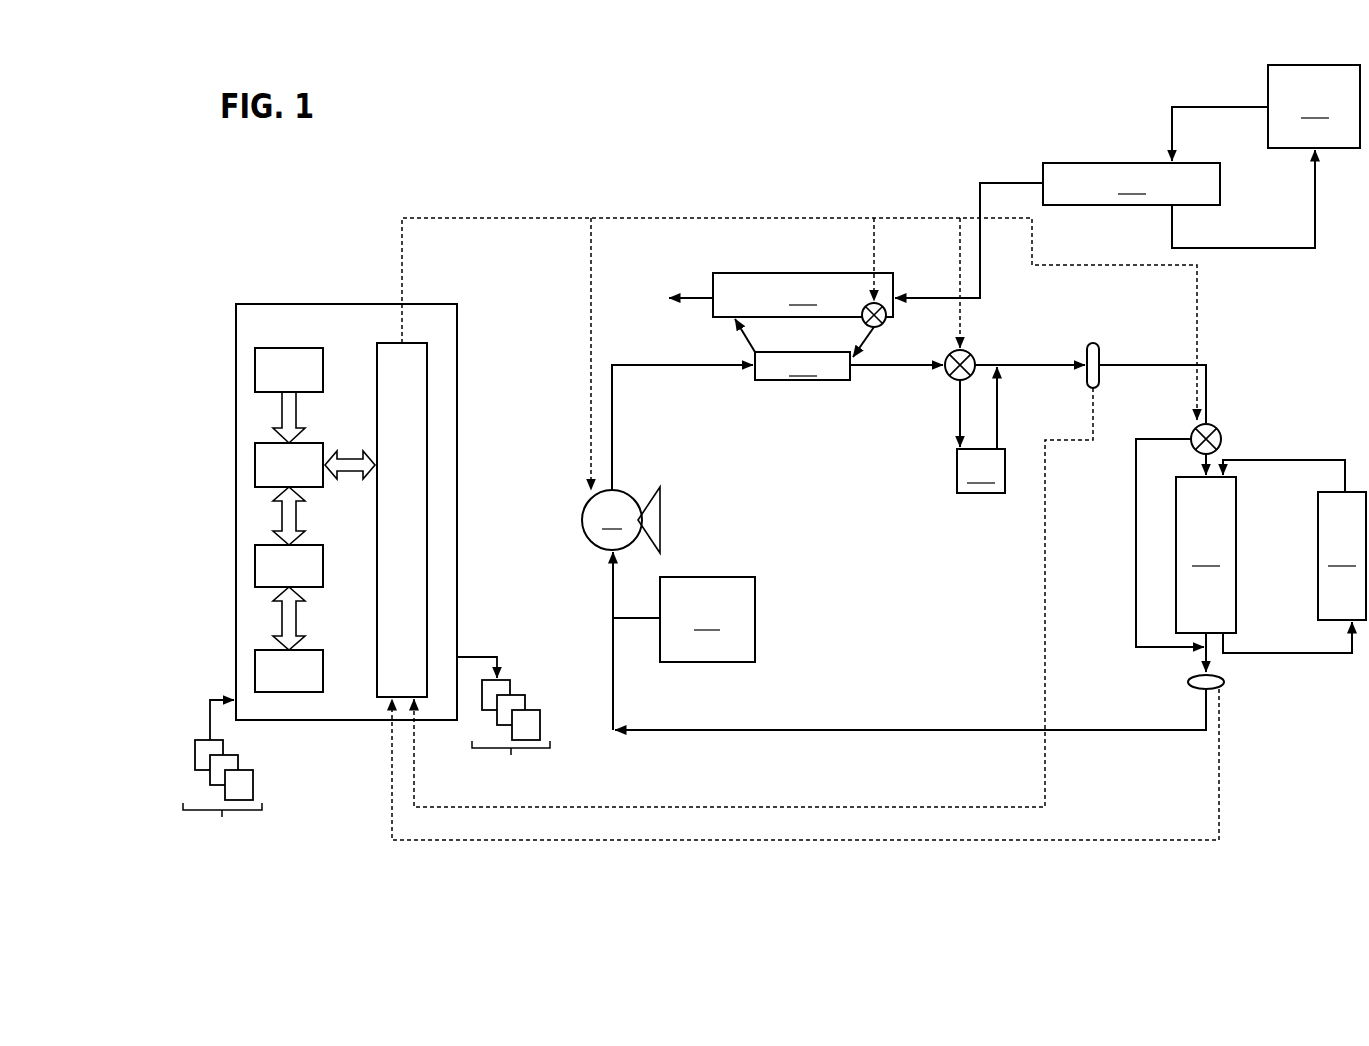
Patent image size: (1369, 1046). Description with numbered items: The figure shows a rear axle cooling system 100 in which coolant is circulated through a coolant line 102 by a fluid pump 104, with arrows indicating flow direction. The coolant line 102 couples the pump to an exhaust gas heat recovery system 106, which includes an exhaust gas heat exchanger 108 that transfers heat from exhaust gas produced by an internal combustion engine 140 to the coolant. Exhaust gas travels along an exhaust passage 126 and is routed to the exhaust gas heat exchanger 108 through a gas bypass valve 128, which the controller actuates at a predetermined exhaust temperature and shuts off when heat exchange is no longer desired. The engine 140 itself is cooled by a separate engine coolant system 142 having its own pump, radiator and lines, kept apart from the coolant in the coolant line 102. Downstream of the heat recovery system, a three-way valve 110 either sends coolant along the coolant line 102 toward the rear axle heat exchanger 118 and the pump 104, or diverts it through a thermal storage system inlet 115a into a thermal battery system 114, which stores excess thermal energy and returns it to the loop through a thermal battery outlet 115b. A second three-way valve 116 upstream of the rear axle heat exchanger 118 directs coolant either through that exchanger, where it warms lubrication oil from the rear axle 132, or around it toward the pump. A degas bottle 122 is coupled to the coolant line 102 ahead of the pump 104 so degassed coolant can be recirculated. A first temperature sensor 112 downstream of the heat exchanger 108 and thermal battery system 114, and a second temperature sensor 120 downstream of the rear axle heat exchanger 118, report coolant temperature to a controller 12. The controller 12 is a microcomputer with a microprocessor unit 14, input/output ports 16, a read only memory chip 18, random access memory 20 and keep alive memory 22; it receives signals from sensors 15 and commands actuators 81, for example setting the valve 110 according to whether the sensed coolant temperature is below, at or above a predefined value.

The cooling system 100 is at (517, 197).
The controller 12 is at (457, 385).
The microprocessor unit 14 is at (255, 455).
The input/output ports 16 is at (387, 343).
The read only memory chip 18 is at (255, 362).
The random access memory 20 is at (255, 560).
The keep alive memory 22 is at (255, 662).
The sensors 15 is at (222, 780).
The actuators 81 is at (508, 727).
The coolant line 102 is at (614, 433).
The fluid pump 104 is at (621, 520).
The exhaust gas heat recovery system 106 is at (815, 268).
The exhaust gas heat exchanger 108 is at (792, 349).
The three-way valve 110 is at (963, 338).
The first temperature sensor 112 is at (1100, 340).
The thermal battery system 114 is at (981, 471).
The thermal storage system inlet 115a is at (960, 398).
The thermal battery outlet 115b is at (997, 430).
The coolant three-way valve 116 is at (1217, 433).
The rear axle heat exchanger 118 is at (1206, 555).
The second temperature sensor 120 is at (1224, 680).
The degas bottle 122 is at (683, 619).
The exhaust passage 126 is at (781, 295).
The gas bypass valve 128 is at (876, 298).
The rear axle 132 is at (1294, 556).
The internal combustion engine 140 is at (1105, 224).
The engine coolant system 142 is at (1266, 113).